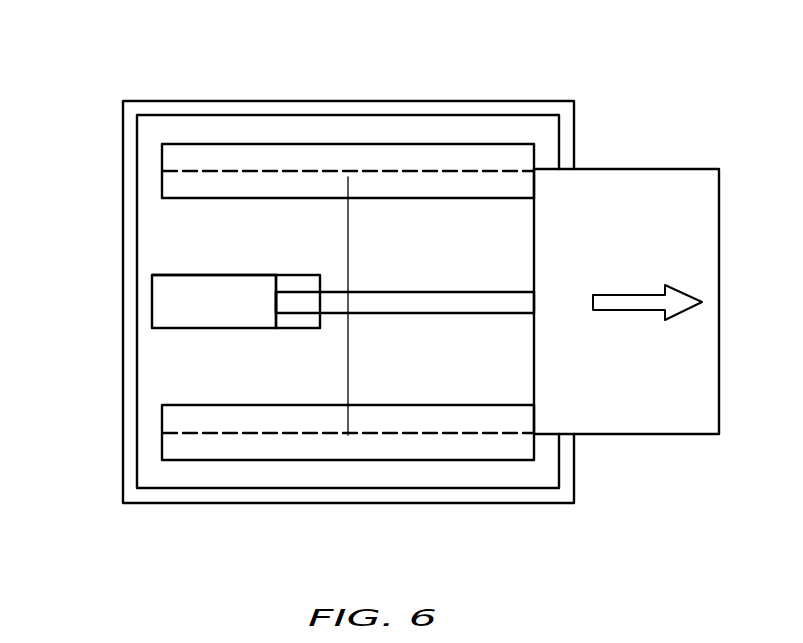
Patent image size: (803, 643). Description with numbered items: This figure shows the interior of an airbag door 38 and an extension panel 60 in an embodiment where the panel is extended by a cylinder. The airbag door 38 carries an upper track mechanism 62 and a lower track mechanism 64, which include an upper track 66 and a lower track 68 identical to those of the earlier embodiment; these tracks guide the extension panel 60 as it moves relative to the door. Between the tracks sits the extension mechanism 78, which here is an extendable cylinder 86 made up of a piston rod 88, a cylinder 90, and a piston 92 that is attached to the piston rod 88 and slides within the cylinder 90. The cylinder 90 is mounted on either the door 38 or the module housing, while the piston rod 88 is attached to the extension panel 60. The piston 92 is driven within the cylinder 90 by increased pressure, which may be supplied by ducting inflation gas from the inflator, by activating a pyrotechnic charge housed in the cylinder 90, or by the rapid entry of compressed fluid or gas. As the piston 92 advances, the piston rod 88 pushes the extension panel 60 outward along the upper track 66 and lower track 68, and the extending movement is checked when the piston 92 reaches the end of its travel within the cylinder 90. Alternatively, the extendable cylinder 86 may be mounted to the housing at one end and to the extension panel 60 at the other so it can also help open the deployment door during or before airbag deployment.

The airbag door 38 is at (473, 123).
The extension panel 60 is at (613, 198).
The upper track mechanism 62 is at (250, 157).
The lower track mechanism 64 is at (295, 447).
The upper track 66 is at (183, 182).
The lower track 68 is at (207, 418).
The extension mechanism 78 is at (208, 328).
The extendable cylinder 86 is at (212, 275).
The piston rod 88 is at (418, 300).
The cylinder 90 is at (238, 275).
The piston 92 is at (276, 300).